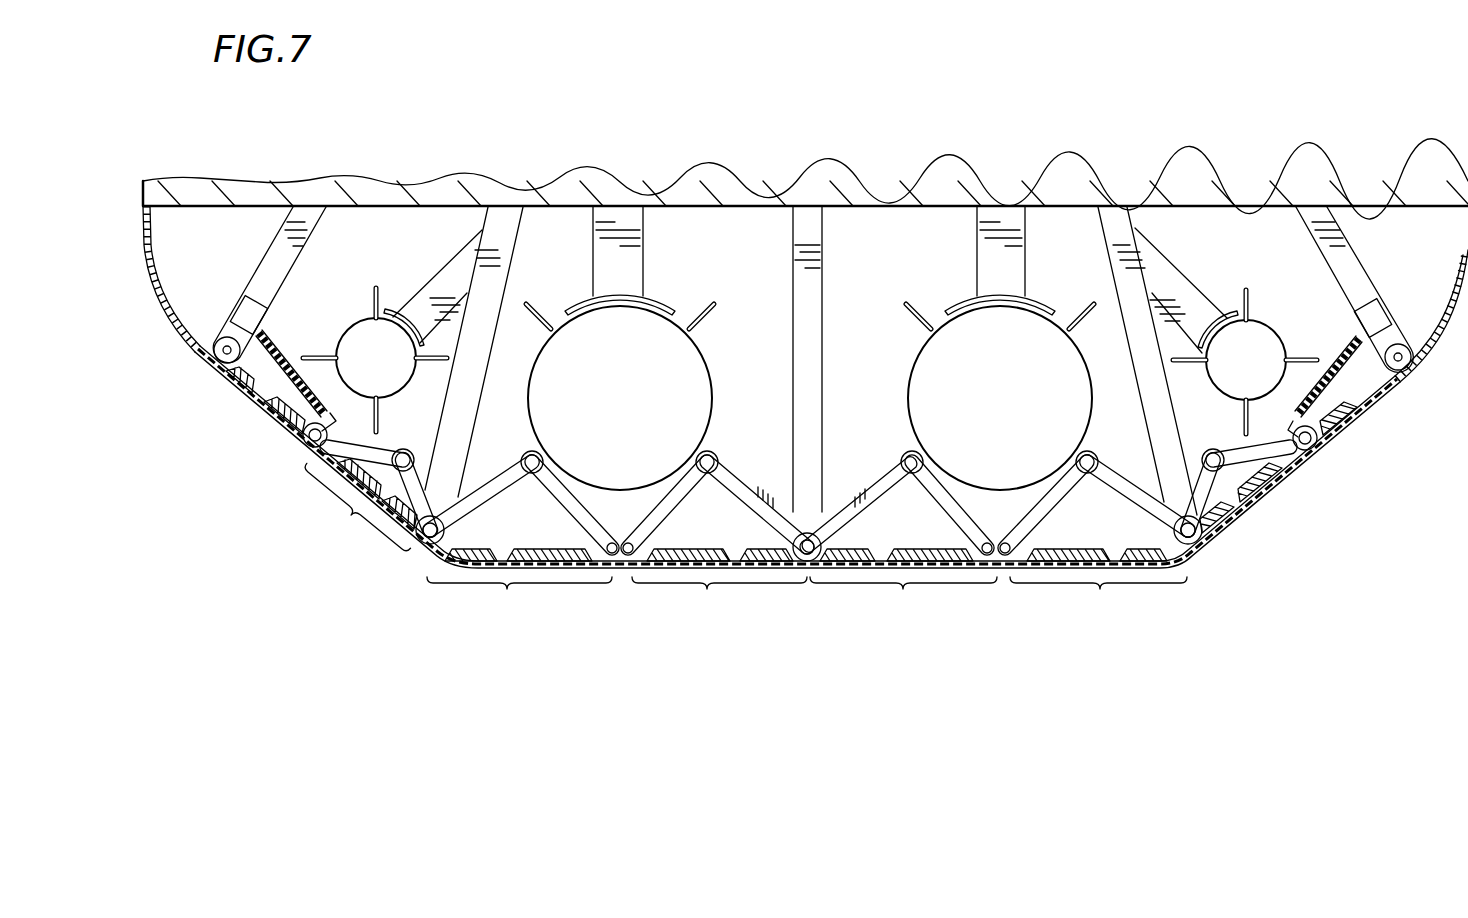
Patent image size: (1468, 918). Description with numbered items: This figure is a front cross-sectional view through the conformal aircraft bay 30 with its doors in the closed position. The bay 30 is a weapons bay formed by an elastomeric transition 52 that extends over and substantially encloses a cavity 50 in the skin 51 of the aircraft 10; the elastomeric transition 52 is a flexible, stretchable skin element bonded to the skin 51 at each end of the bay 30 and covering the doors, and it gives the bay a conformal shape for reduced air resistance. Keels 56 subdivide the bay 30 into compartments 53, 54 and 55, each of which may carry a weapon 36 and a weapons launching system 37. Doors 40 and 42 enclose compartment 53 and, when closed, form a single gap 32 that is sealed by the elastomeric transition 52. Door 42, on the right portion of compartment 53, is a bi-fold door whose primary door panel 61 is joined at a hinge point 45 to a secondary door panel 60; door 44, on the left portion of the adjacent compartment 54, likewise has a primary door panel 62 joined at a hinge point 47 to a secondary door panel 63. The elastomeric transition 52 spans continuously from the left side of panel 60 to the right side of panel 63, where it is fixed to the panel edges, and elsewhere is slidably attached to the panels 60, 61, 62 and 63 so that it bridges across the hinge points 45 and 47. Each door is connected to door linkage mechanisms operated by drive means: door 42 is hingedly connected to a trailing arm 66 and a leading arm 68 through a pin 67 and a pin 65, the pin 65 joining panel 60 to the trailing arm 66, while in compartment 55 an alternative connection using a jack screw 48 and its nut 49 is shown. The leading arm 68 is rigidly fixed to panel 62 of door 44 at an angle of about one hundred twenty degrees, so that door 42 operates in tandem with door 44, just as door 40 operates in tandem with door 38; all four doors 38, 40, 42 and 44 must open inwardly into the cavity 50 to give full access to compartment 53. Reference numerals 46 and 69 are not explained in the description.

The aircraft 10 is at (633, 458).
The conformal aircraft bay 30 is at (805, 441).
The gap 32 is at (310, 452).
The weapon 36 is at (391, 374).
The weapons launching system 37 is at (623, 222).
The door 38 is at (351, 515).
The door 40 is at (507, 589).
The door 42 is at (707, 589).
The door 44 is at (903, 589).
The hinge point 45 is at (731, 543).
The track section 46 is at (1100, 589).
The hinge point 47 is at (891, 545).
The jack screw 48 is at (245, 397).
The nut 49 is at (240, 312).
The cavity 50 is at (1440, 230).
The skin 51 is at (184, 347).
The elastomeric transition 52 is at (245, 432).
The compartment 53 is at (731, 252).
The compartment 54 is at (908, 252).
The compartment 55 is at (400, 252).
The keel 56 is at (810, 222).
The secondary door panel 60 is at (717, 570).
The primary door panel 61 is at (773, 570).
The primary door panel 62 is at (860, 572).
The secondary door panel 63 is at (947, 572).
The pin 65 is at (637, 572).
The trailing arm 66 is at (660, 511).
The pin 67 is at (713, 458).
The leading arm 68 is at (755, 487).
The link 69 is at (858, 490).